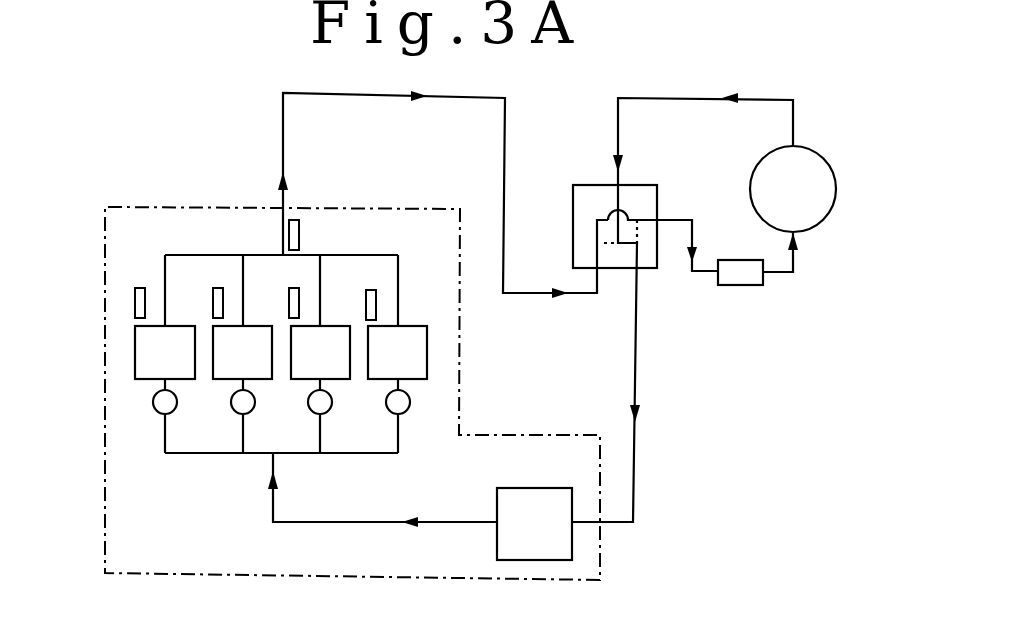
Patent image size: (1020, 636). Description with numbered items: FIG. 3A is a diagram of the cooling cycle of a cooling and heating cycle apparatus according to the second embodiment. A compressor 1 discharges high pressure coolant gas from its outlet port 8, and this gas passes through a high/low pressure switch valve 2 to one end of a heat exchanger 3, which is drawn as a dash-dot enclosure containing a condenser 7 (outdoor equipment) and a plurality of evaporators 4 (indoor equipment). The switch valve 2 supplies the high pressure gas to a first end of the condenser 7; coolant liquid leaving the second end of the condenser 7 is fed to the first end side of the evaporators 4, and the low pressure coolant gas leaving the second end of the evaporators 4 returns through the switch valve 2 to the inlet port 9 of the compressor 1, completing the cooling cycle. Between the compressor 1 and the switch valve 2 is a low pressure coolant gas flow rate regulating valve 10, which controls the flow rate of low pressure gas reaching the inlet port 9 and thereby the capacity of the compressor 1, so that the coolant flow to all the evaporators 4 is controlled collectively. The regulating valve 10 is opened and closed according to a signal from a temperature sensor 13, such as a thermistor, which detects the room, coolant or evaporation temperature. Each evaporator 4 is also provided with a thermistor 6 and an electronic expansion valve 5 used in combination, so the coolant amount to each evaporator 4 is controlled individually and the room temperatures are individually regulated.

The compressor 1 is at (815, 193).
The high/low pressure switch valve 2 is at (578, 198).
The heat exchanger 3 is at (106, 462).
The evaporator 4 is at (150, 352).
The electronic expansion valve 5 is at (160, 400).
The thermistor 6 is at (136, 300).
The condenser 7 is at (504, 506).
The outlet port 8 is at (806, 153).
The inlet port 9 is at (800, 236).
The low pressure coolant gas flow rate regulating valve 10 is at (744, 287).
The temperature sensor 13 is at (300, 235).